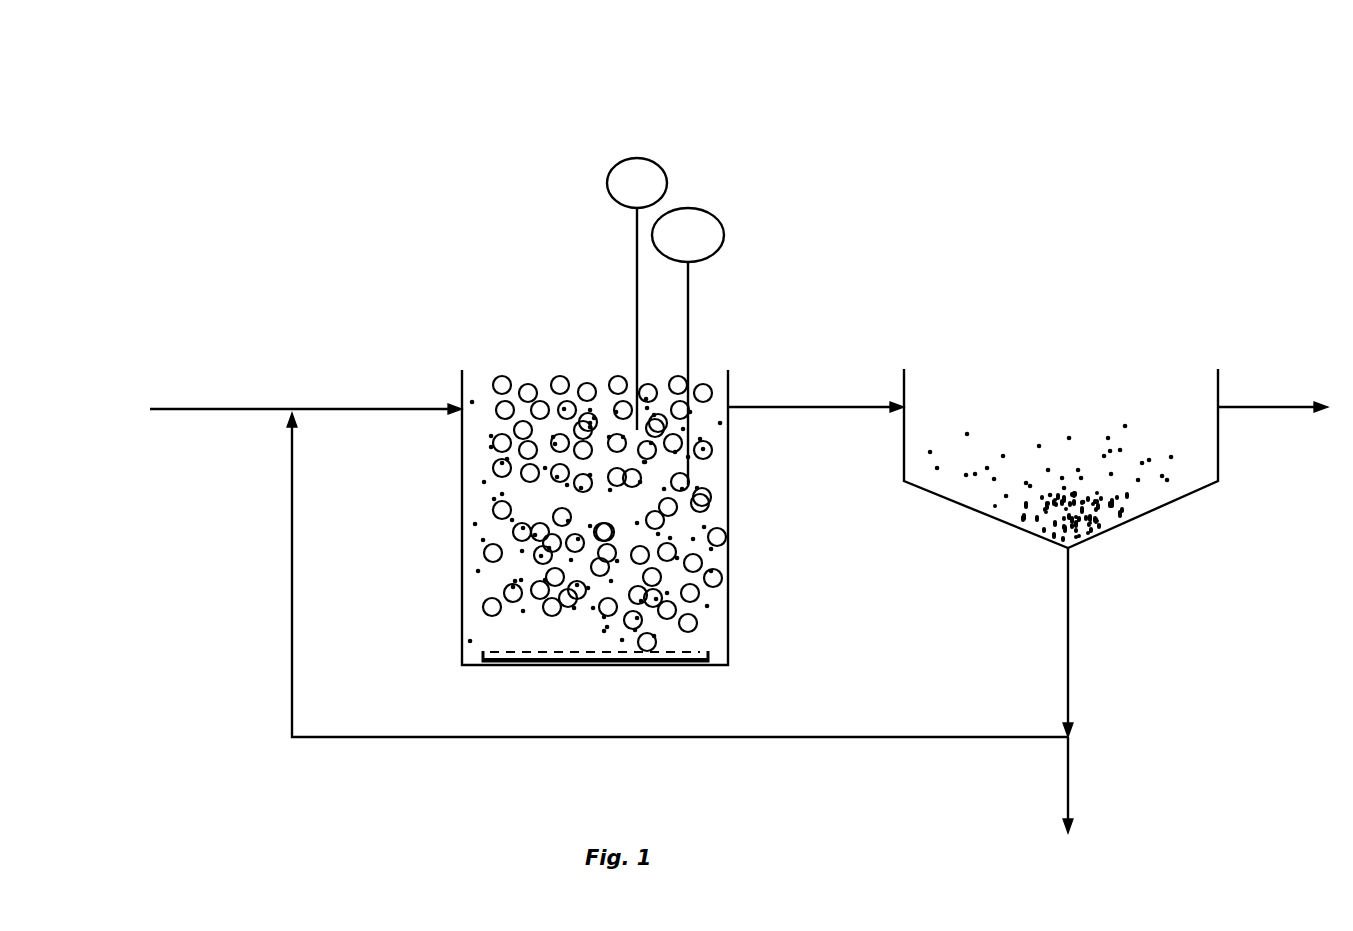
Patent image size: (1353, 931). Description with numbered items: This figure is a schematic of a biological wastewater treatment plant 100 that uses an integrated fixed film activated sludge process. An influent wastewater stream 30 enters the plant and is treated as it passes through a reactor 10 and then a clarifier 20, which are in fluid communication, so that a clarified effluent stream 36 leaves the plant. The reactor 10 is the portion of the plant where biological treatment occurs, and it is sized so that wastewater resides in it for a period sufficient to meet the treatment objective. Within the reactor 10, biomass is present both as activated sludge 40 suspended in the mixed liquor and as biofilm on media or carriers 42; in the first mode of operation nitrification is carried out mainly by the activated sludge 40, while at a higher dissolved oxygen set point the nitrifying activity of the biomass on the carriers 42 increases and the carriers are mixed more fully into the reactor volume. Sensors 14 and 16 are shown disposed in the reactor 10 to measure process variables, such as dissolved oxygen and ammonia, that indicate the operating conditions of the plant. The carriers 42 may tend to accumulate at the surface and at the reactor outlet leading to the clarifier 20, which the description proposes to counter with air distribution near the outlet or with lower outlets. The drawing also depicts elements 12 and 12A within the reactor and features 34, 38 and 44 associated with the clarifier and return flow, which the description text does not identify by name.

The plant 100 is at (1127, 145).
The reactor 10 is at (462, 383).
The aeration device 12 is at (695, 665).
The diffuser membrane 12A is at (677, 652).
The sensor 14 is at (724, 237).
The sensor 16 is at (665, 178).
The clarifier 20 is at (1218, 378).
The influent wastewater stream 30 is at (253, 407).
The return activated sludge line 34 is at (863, 737).
The clarified effluent stream 36 is at (1272, 405).
The waste sludge line 38 is at (1068, 787).
The activated sludge 40 is at (535, 503).
The carriers 42 is at (617, 377).
The settled sludge 44 is at (1090, 527).